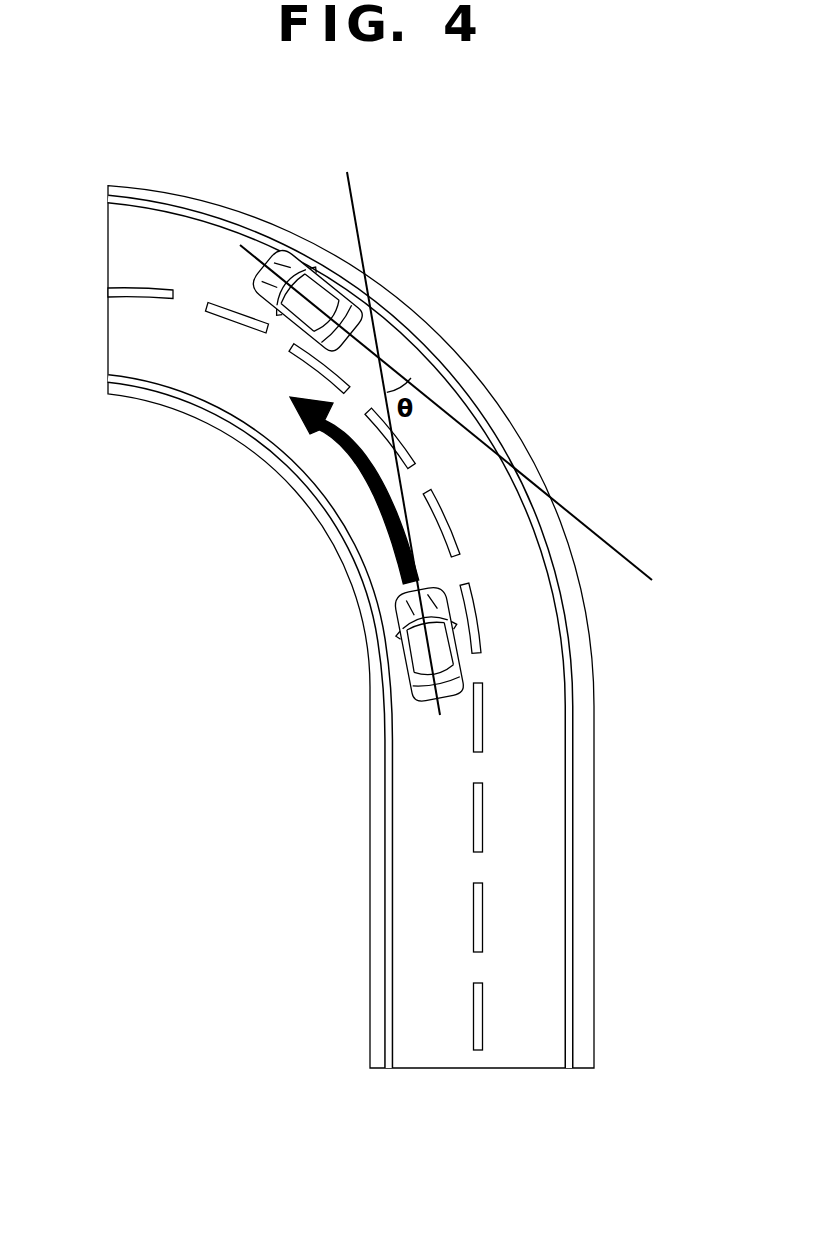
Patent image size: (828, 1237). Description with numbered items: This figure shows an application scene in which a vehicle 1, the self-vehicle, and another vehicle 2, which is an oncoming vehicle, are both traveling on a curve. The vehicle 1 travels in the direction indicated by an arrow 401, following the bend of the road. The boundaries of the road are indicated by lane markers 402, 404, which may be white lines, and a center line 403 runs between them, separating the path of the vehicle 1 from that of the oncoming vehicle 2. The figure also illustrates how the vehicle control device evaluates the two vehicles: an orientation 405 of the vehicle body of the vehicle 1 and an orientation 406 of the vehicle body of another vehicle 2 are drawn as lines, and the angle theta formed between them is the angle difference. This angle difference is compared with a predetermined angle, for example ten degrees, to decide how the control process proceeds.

The vehicle 1 is at (442, 640).
The another vehicle 2 is at (292, 302).
The arrow 401 is at (365, 490).
The lane marker 402 is at (393, 825).
The center line 403 is at (481, 725).
The lane marker 404 is at (570, 800).
The orientation of the vehicle body of the vehicle 405 is at (355, 186).
The orientation of the vehicle body of another vehicle 406 is at (610, 538).